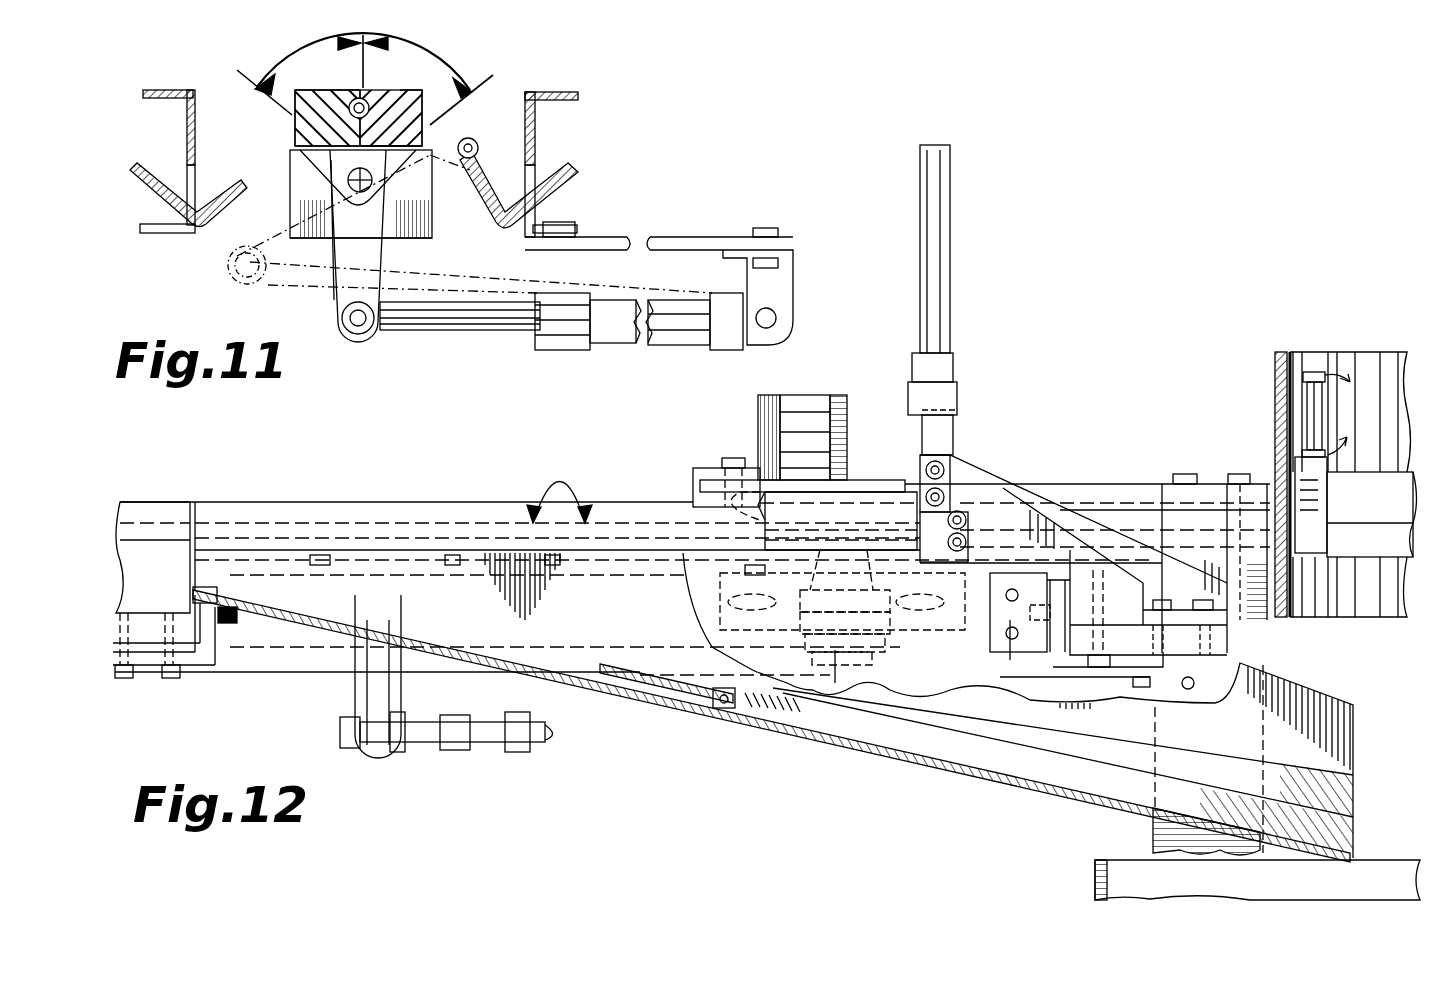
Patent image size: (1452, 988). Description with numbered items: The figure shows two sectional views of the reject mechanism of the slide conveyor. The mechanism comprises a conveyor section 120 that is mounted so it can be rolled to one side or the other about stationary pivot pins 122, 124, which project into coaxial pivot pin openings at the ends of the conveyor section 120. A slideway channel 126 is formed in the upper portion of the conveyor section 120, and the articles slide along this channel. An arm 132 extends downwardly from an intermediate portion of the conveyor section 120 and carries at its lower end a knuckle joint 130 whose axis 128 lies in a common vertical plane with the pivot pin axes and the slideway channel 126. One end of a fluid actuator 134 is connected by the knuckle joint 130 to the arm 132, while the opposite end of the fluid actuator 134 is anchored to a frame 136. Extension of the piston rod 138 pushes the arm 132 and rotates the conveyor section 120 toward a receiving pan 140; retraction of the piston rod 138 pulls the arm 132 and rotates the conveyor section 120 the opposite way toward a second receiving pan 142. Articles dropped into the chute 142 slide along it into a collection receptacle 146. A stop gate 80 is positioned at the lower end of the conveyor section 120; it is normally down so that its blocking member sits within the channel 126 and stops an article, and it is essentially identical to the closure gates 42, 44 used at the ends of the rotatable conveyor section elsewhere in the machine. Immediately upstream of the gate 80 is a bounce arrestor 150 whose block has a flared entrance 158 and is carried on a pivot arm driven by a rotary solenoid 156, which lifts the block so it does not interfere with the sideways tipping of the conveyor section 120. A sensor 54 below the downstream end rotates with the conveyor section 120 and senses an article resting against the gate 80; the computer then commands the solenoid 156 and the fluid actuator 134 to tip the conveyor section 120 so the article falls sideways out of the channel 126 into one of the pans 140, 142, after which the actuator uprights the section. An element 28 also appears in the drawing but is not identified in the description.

In FIG. 11, the slideway channel 126 is at (318, 88).
In FIG. 11, the conveyor section 120 is at (445, 125).
In FIG. 12, the conveyor section 120 is at (458, 518).
In FIG. 11, the receiving pan 140 is at (545, 178).
In FIG. 11, the second receiving pan 142 is at (153, 163).
In FIG. 12, the second receiving pan 142 is at (762, 727).
In FIG. 11, the arm 132 is at (343, 295).
In FIG. 12, the arm 132 is at (355, 688).
In FIG. 11, the knuckle joint 130 is at (350, 345).
In FIG. 12, the knuckle joint 130 is at (385, 758).
In FIG. 11, the axis 128 is at (366, 332).
In FIG. 11, the piston rod 138 is at (447, 327).
In FIG. 11, the fluid actuator 134 is at (523, 340).
In FIG. 11, the frame 136 is at (788, 292).
In FIG. 12, the rotary solenoid 156 is at (800, 395).
In FIG. 12, the bounce arrestor 150 is at (803, 493).
In FIG. 12, the flared entrance 158 is at (715, 520).
In FIG. 12, the stop gate 80 is at (968, 420).
In FIG. 12, the wall 28 is at (1278, 400).
In FIG. 12, the gate 42 is at (1345, 426).
In FIG. 12, the gate 44 is at (1323, 415).
In FIG. 12, the pivot pin 122 is at (240, 613).
In FIG. 12, the pivot pin 124 is at (1035, 620).
In FIG. 12, the sensor 54 is at (840, 600).
In FIG. 12, the collection receptacle 146 is at (1105, 880).